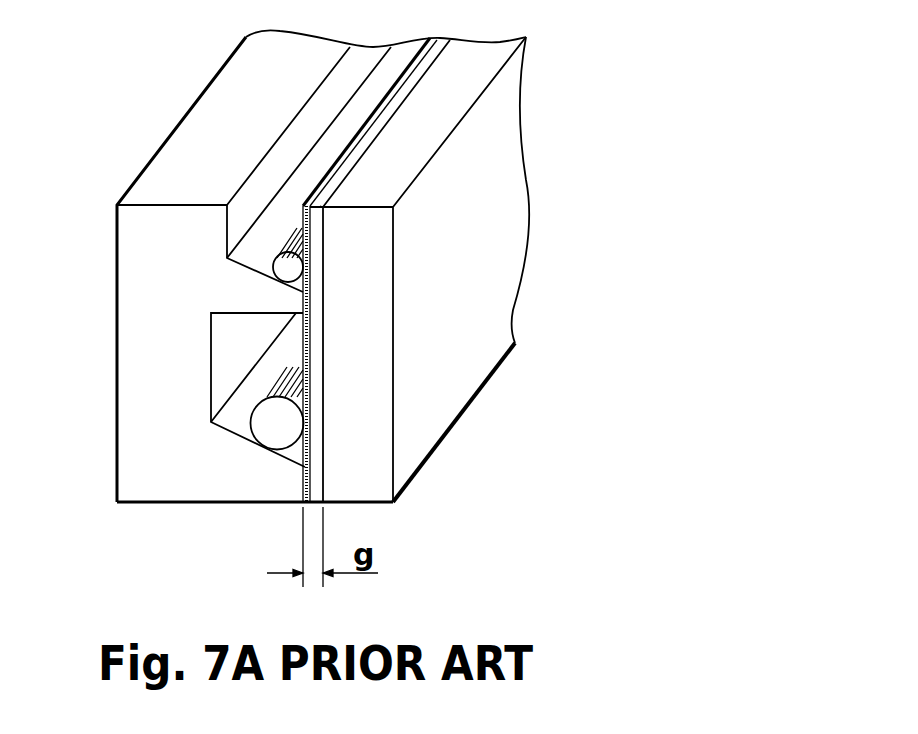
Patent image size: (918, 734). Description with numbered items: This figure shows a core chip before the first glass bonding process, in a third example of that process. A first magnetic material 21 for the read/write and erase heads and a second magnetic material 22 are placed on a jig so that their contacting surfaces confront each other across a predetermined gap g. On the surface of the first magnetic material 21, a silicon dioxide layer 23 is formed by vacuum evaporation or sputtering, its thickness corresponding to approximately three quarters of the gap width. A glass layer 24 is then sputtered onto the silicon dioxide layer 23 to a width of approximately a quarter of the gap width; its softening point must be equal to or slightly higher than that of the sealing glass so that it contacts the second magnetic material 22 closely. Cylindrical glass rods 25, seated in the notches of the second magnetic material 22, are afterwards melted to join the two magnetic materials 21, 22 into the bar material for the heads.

The first magnetic material 21 is at (360, 460).
The second magnetic material 22 is at (163, 480).
The silicon dioxide layer 23 is at (315, 245).
The glass layer 24 is at (320, 205).
The cylindrical glass rod 25 is at (290, 268).